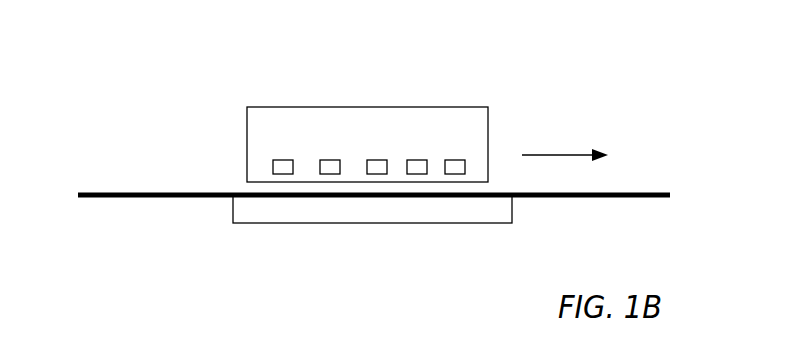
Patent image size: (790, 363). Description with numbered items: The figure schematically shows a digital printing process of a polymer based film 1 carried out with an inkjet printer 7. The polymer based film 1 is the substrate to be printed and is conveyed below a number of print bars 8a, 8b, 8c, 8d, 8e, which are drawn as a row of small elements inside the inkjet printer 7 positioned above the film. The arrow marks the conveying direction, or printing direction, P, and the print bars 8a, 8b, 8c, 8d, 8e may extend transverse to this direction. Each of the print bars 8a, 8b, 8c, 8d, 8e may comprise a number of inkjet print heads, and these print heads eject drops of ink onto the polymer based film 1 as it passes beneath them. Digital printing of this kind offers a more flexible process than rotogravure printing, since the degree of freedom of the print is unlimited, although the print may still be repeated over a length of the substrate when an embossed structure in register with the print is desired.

The polymer based film 1 is at (178, 191).
The inkjet printer 7 is at (489, 131).
The print bar 8a is at (287, 160).
The print bar 8b is at (330, 160).
The print bar 8c is at (373, 160).
The print bar 8d is at (417, 160).
The print bar 8e is at (458, 160).
The conveying direction P is at (579, 156).